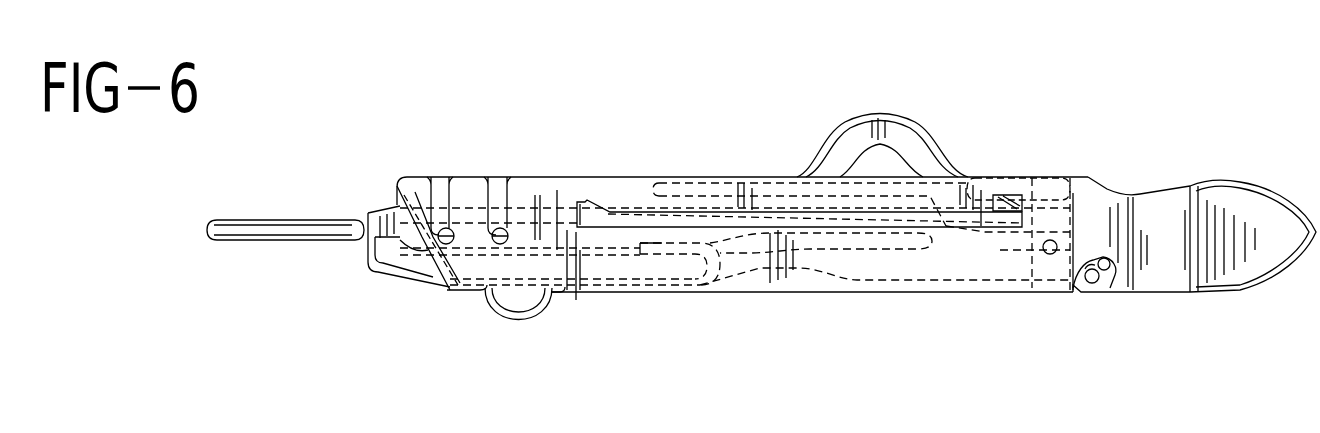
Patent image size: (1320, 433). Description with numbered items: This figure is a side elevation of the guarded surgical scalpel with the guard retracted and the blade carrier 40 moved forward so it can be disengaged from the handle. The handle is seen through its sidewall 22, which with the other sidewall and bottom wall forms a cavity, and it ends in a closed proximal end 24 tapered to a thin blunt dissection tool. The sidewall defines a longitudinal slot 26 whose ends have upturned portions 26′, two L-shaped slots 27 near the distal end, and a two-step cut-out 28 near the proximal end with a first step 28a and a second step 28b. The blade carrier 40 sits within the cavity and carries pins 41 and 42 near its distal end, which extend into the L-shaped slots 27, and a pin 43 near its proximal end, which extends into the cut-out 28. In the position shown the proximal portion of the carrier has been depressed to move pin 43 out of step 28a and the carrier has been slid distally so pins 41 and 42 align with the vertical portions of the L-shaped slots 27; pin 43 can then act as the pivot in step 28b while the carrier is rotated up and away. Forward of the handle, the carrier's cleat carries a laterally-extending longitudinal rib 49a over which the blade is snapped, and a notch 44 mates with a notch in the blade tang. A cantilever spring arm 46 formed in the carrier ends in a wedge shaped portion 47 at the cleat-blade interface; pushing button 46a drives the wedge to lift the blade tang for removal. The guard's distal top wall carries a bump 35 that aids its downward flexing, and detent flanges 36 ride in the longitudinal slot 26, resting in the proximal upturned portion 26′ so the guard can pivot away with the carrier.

The sidewall 22 is at (945, 265).
The proximal end 24 is at (1237, 207).
The longitudinal slot 26 is at (640, 177).
The upturned portion 26′ is at (578, 200).
The L-shaped slot 27 is at (508, 236).
The cut-out 28 is at (1106, 293).
The step 28a is at (1104, 258).
The step 28b is at (1088, 293).
The bump 35 is at (877, 120).
The detent flange 36 is at (1022, 200).
The blade carrier 40 is at (352, 238).
The pin 41 is at (508, 238).
The pin 42 is at (460, 283).
The pin 43 is at (1094, 278).
The notch 44 is at (398, 205).
The cantilever spring arm 46 is at (406, 280).
The button 46a is at (560, 310).
The wedge shaped portion 47 is at (365, 213).
The longitudinal rib 49a is at (222, 235).